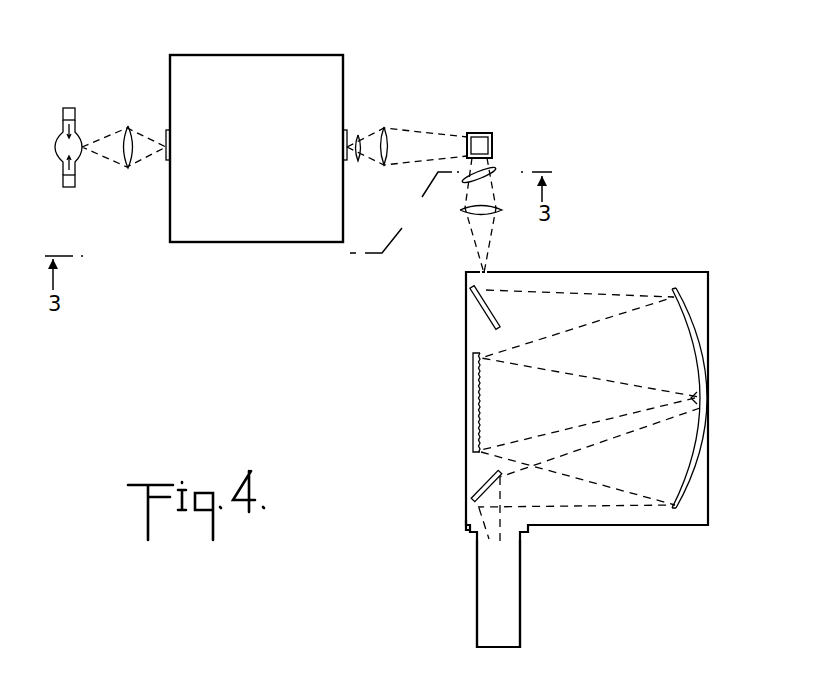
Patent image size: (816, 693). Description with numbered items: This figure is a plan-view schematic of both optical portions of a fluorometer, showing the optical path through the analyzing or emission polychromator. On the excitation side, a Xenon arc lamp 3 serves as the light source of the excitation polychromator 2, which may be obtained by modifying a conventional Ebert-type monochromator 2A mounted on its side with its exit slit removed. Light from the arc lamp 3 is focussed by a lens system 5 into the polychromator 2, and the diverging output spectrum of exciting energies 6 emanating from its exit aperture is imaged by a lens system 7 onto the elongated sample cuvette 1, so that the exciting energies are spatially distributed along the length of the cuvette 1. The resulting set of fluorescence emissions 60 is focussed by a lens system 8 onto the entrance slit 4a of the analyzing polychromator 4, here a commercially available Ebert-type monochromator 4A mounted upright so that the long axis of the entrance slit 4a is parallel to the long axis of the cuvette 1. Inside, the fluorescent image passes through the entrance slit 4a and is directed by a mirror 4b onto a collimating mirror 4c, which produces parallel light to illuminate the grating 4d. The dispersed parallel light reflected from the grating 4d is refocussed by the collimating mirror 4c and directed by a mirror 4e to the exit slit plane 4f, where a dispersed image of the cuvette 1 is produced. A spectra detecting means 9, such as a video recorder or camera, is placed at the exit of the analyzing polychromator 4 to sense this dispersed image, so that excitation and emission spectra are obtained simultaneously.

The elongated sample cuvette 1 is at (474, 133).
The excitation polychromator 2 is at (230, 68).
The monochromator 2A is at (269, 162).
The Xenon arc lamp 3 is at (63, 113).
The analyzing polychromator 4 is at (714, 365).
The entrance slit 4a is at (473, 272).
The monochromator 4A is at (657, 525).
The mirror 4b is at (480, 312).
The collimating mirror 4c is at (674, 286).
The grating 4d is at (470, 402).
The mirror 4e is at (470, 484).
The exit slit plane 4f is at (463, 529).
The lens system 5 is at (129, 127).
The output spectrum of exciting energies 6 is at (358, 135).
The lens system 7 is at (388, 134).
The lens system 8 is at (488, 212).
The spectra detecting means 9 is at (511, 609).
The fluorescence emissions 60 is at (485, 176).